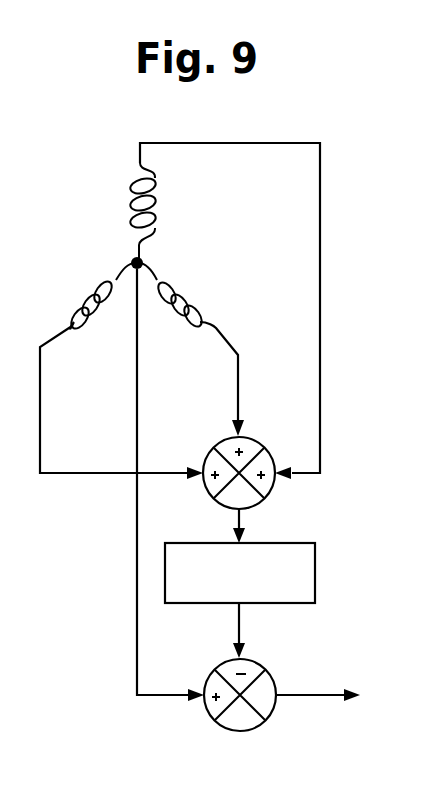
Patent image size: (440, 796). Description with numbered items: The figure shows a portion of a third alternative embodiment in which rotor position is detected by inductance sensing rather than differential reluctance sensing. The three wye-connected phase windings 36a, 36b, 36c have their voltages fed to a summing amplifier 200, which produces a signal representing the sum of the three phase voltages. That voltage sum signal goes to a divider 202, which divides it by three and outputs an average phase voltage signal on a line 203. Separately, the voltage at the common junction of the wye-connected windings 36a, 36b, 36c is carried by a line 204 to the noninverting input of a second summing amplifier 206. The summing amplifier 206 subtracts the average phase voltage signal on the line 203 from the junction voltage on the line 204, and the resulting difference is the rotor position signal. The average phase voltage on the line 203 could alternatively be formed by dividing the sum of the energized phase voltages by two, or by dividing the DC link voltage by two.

The phase winding 36a is at (130, 205).
The phase winding 36b is at (88, 297).
The phase winding 36c is at (203, 305).
The summing amplifier 200 is at (270, 492).
The divider 202 is at (315, 573).
The line 203 is at (242, 628).
The line 204 is at (137, 582).
The summing amplifier 206 is at (262, 720).